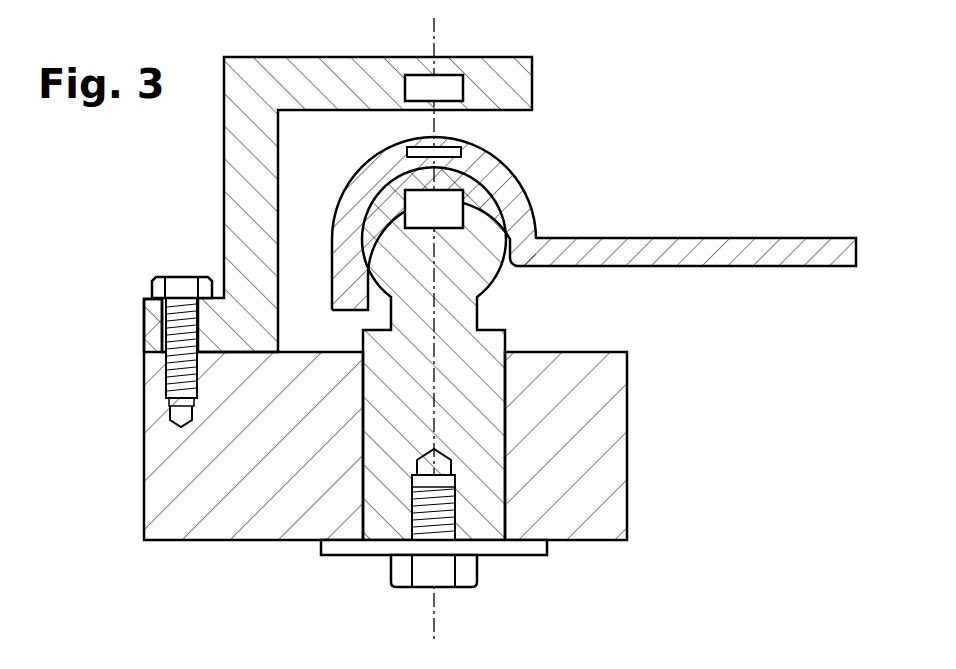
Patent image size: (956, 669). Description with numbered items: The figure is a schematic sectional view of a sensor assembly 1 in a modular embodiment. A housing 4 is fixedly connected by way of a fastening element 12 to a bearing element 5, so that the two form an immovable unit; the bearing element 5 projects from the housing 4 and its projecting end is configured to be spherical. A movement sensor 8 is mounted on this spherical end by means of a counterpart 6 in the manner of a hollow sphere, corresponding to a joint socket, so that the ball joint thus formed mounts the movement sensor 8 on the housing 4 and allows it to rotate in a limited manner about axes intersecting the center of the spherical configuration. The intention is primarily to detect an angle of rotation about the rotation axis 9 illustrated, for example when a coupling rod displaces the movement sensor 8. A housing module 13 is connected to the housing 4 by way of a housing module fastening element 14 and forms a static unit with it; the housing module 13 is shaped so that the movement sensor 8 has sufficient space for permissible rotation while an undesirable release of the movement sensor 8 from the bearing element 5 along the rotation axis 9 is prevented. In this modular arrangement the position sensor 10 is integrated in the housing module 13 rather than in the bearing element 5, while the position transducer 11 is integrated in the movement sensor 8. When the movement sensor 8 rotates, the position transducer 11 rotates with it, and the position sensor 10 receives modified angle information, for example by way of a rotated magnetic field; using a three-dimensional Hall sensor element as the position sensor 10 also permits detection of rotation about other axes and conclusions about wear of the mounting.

The sensor assembly 1 is at (186, 171).
The housing 4 is at (173, 487).
The bearing element 5 is at (487, 264).
The counterpart 6 is at (505, 172).
The movement sensor 8 is at (768, 250).
The rotation axis 9 is at (437, 615).
The position sensor 10 is at (450, 82).
The position transducer 11 is at (417, 152).
The fastening element 12 is at (400, 565).
The housing module 13 is at (248, 198).
The housing module fastening element 14 is at (157, 284).